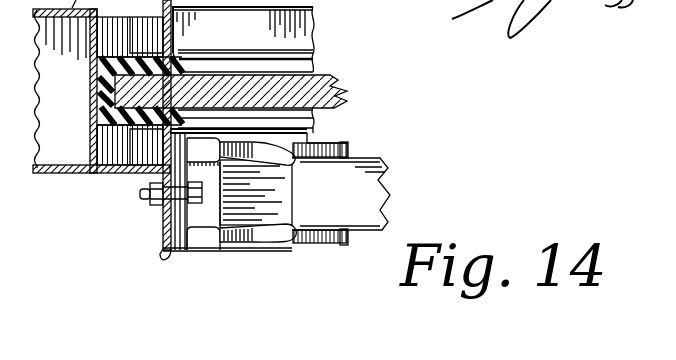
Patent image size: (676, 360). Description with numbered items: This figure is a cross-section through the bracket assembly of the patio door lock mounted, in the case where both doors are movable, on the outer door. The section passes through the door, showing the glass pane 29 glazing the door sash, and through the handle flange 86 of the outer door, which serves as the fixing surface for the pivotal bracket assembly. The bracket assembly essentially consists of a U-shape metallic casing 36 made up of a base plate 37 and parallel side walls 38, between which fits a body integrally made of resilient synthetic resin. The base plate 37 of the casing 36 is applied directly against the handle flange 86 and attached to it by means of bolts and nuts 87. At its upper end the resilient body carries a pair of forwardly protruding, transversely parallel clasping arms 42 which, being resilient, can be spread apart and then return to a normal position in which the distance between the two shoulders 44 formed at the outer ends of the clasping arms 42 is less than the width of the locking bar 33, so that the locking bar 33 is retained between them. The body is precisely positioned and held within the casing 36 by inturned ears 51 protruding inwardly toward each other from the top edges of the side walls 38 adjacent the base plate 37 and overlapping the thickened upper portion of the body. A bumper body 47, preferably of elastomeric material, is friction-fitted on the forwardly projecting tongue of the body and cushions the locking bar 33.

The glass pane 29 is at (331, 75).
The locking bar 33 is at (378, 195).
The U-shape metallic casing 36 is at (236, 251).
The base plate 37 is at (174, 255).
The side walls 38 is at (262, 253).
The clasping arms 42 is at (267, 226).
The shoulders 44 is at (310, 244).
The bumper body 47 is at (347, 242).
The inturned ears 51 is at (203, 250).
The handle flange 86 is at (161, 222).
The bolts and nuts 87 is at (148, 184).